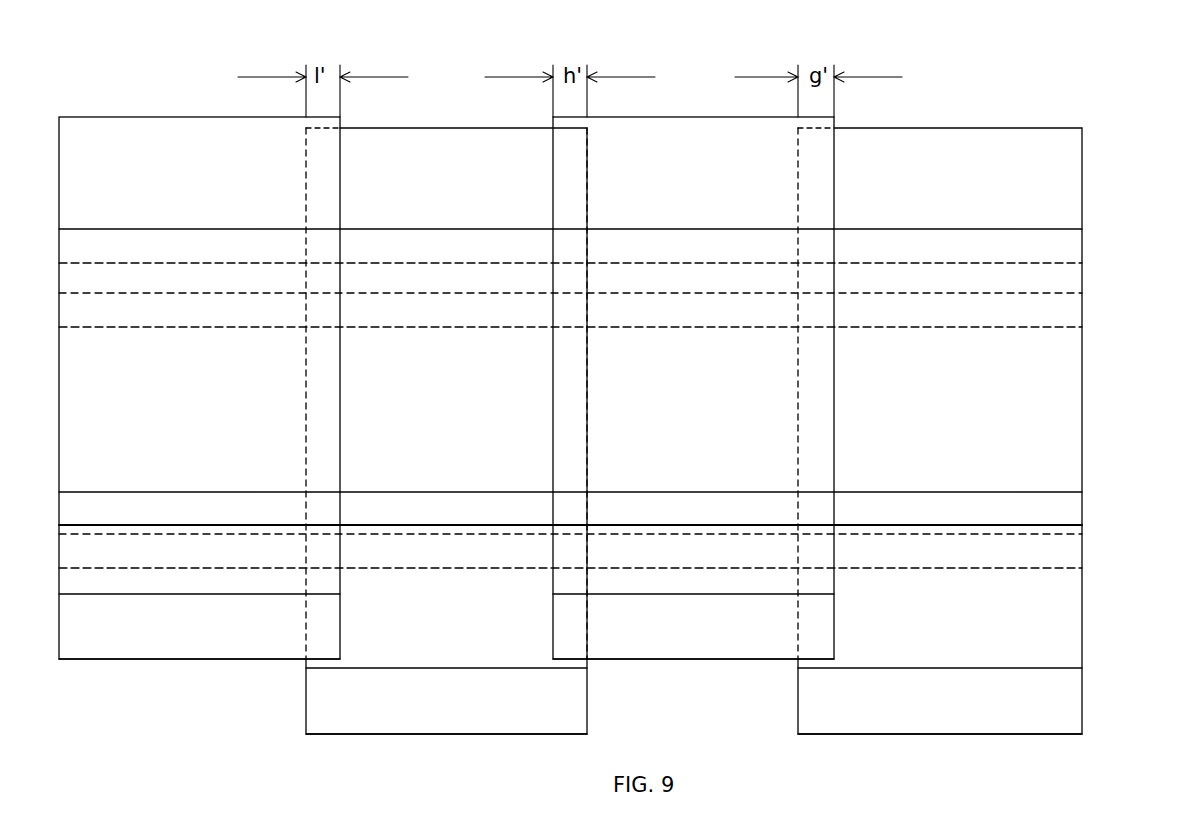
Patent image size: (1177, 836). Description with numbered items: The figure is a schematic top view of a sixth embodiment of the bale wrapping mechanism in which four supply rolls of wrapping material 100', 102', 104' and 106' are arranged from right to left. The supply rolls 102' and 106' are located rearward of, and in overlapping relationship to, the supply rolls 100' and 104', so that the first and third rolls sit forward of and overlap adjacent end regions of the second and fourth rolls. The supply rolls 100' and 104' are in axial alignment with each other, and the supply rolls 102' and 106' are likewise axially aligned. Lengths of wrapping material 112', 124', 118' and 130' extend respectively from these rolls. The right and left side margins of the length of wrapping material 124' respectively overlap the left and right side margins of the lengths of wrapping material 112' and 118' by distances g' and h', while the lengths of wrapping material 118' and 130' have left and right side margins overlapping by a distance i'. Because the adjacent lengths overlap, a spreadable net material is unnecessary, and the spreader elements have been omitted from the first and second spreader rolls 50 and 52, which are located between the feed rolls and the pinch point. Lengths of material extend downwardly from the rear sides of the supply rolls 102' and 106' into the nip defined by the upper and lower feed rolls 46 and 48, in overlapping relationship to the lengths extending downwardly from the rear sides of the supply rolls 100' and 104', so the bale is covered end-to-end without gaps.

The length of wrapping material 130' is at (199, 339).
The length of wrapping material 118' is at (446, 374).
The length of wrapping material 124' is at (693, 336).
The length of wrapping material 112' is at (940, 387).
The supply roll of wrapping material 106' is at (199, 691).
The supply roll of wrapping material 104' is at (446, 735).
The supply roll of wrapping material 102' is at (693, 694).
The supply roll of wrapping material 100' is at (940, 736).
The second spreader roll 52 is at (1058, 229).
The first spreader roll 50 is at (1058, 327).
The lower feed roll 48 is at (1058, 492).
The upper feed roll 46 is at (1058, 568).